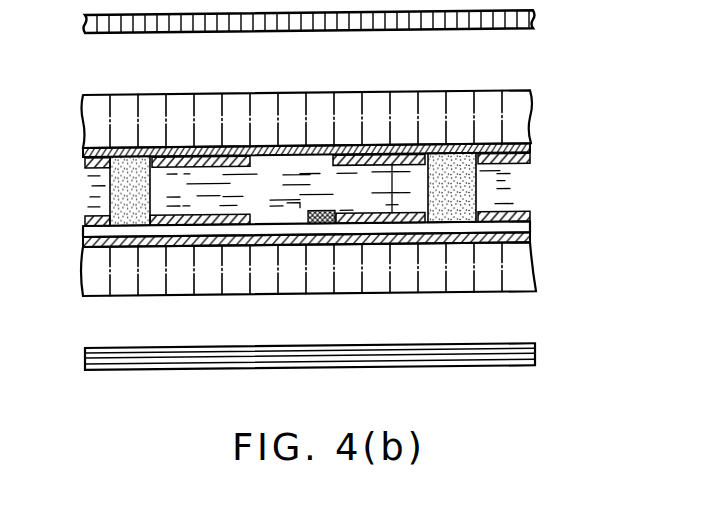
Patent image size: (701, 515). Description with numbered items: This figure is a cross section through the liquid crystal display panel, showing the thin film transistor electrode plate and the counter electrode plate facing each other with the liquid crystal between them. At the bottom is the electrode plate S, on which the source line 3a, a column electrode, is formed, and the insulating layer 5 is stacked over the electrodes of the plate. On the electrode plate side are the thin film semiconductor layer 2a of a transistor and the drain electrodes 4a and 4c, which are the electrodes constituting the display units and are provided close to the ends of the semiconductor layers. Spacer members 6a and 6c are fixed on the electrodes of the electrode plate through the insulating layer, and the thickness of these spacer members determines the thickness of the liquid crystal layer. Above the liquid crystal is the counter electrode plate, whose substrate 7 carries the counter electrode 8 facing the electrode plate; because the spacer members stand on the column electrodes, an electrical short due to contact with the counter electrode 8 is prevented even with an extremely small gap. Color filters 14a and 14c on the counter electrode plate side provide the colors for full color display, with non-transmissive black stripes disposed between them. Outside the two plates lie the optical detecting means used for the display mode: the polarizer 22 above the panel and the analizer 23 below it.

The polarizer 22 is at (538, 18).
The upper transparent substrate 7 is at (526, 112).
The counter electrode 8 is at (531, 150).
The drain electrode 4a is at (152, 178).
The color filter 14a is at (203, 202).
The source line 3a is at (290, 210).
The thin film semiconductor layer 2a is at (323, 208).
The drain electrode 4c is at (398, 168).
The color filter 14c is at (516, 165).
The spacer member 6a is at (130, 190).
The spacer member 6c is at (457, 188).
The insulating layer 5 is at (527, 225).
The electrode plate S is at (522, 270).
The analizer 23 is at (538, 352).